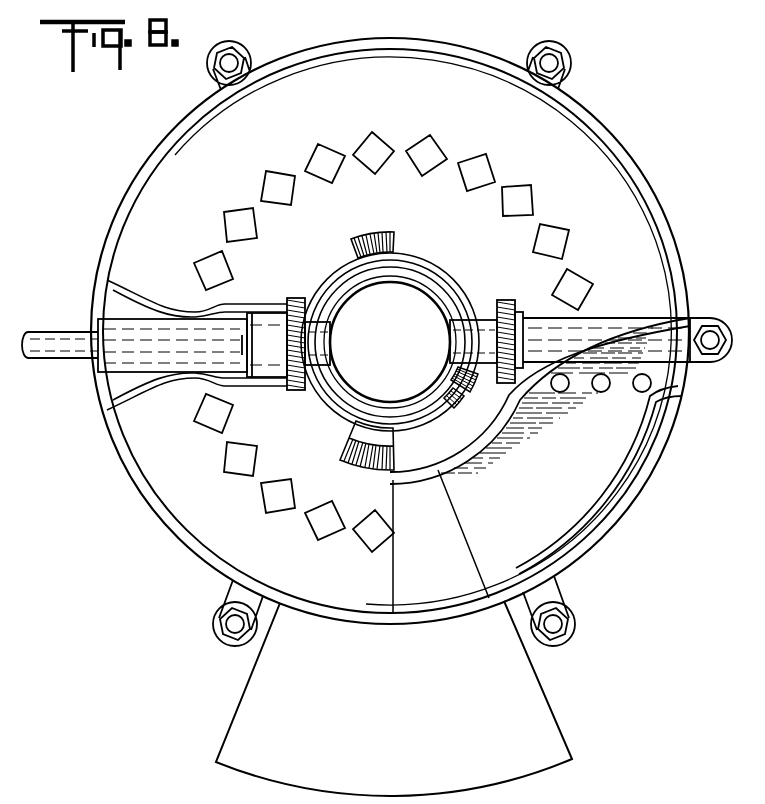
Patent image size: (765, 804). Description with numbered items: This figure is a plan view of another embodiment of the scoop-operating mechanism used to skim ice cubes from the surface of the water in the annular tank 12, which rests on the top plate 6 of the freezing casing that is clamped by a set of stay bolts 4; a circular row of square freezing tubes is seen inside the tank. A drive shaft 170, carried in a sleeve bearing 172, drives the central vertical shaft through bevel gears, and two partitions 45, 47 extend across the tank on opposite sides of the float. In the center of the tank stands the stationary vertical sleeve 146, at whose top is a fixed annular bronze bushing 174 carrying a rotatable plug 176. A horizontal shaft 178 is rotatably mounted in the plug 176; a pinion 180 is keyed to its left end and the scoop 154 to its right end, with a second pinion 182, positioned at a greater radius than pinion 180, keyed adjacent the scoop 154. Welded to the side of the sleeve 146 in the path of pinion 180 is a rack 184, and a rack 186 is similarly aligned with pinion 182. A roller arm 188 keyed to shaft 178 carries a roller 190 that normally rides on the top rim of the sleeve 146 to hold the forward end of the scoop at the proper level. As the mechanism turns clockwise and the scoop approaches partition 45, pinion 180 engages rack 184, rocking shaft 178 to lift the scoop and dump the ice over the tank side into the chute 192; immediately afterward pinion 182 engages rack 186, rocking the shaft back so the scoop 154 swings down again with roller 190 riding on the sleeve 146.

The stay bolts 4 is at (207, 70).
The top plate 6 is at (160, 153).
The annular tank 12 is at (610, 160).
The partition 45 is at (132, 297).
The partition 47 is at (133, 397).
The stationary vertical sleeve 146 is at (423, 414).
The scoop 154 is at (627, 495).
The shaft 170 is at (49, 337).
The sleeve bearing 172 is at (164, 337).
The annular bronze bushing 174 is at (440, 292).
The rotatable plug 176 is at (413, 290).
The horizontal shaft 178 is at (318, 334).
The pinion 180 is at (298, 392).
The pinion 182 is at (505, 300).
The rack 184 is at (391, 239).
The rack 186 is at (345, 449).
The roller arm 188 is at (467, 378).
The roller 190 is at (457, 396).
The chute 192 is at (262, 688).